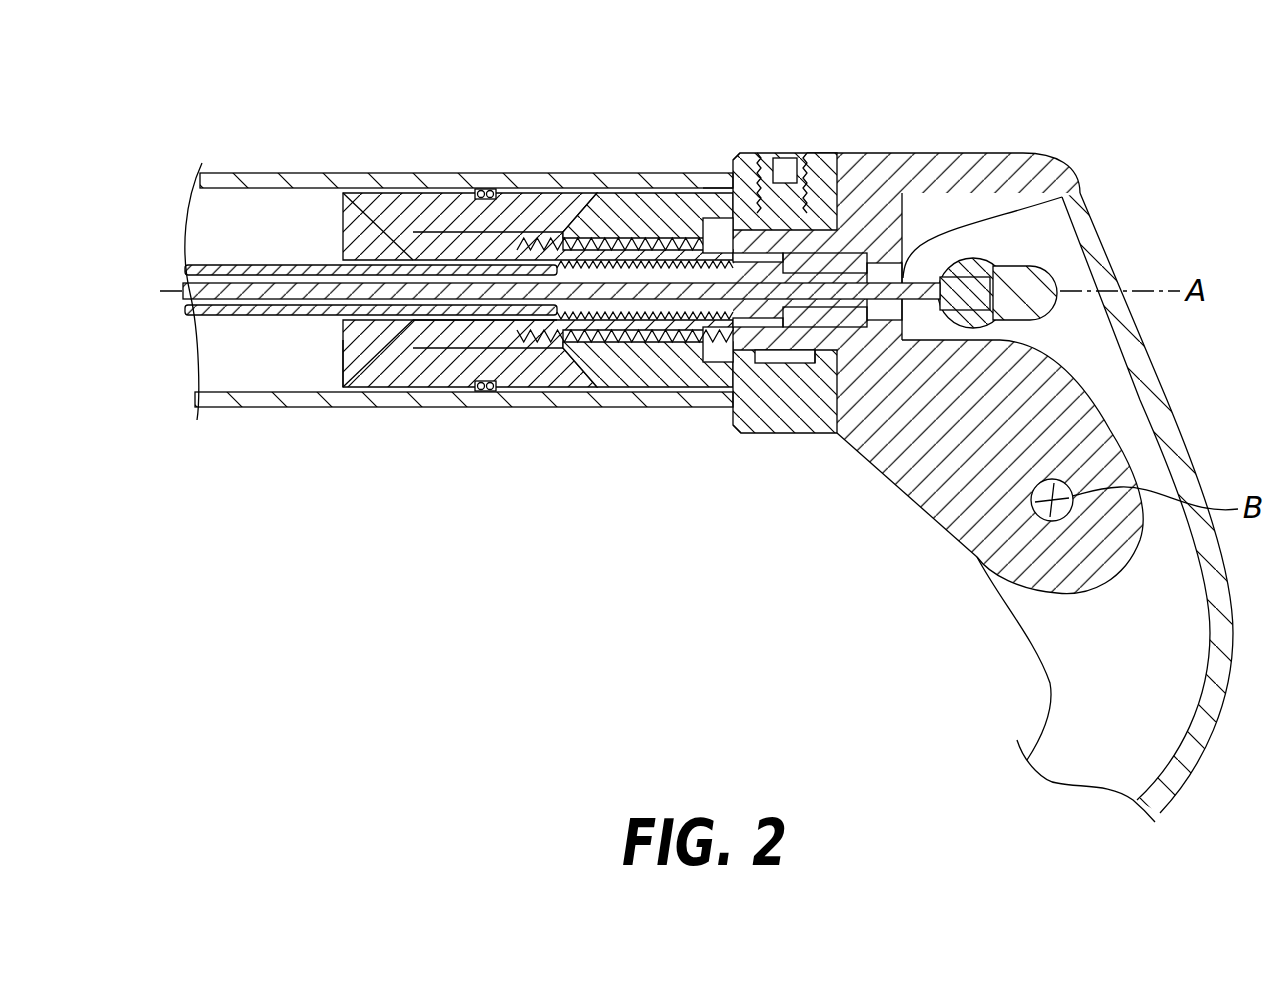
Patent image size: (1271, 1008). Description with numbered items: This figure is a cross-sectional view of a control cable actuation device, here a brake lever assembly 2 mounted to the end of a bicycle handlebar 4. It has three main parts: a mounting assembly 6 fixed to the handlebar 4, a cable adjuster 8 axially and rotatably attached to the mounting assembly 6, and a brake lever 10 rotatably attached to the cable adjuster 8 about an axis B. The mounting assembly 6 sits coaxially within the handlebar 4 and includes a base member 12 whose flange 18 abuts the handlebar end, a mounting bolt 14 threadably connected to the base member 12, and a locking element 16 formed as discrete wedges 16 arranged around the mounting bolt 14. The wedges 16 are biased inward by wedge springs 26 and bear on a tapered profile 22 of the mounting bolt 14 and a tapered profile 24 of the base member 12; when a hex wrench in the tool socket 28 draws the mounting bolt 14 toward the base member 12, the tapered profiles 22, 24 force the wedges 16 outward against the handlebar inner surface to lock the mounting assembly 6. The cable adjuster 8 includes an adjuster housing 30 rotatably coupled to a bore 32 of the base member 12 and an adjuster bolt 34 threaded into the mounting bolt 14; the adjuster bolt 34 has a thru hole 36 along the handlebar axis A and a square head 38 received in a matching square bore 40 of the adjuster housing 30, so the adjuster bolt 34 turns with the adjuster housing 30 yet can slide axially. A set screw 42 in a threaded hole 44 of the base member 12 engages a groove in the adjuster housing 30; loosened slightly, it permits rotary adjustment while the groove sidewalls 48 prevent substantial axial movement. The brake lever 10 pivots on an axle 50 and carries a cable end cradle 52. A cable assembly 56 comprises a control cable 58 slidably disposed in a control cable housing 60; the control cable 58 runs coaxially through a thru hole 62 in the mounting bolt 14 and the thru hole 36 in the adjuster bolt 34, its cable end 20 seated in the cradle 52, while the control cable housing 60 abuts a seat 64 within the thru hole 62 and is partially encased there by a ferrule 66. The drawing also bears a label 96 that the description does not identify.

The brake lever assembly 2 is at (1065, 155).
The bicycle handlebar 4 is at (278, 173).
The mounting assembly 6 is at (483, 420).
The cable adjuster 8 is at (962, 135).
The brake lever 10 is at (1117, 273).
The base member 12 is at (737, 153).
The mounting bolt 14 is at (370, 348).
The locking element 16 is at (448, 208).
The flange 18 is at (748, 153).
The cable end 20 is at (1038, 258).
The tapered profile 22 is at (402, 203).
The tapered profile 24 is at (578, 205).
The wedge springs 26 is at (486, 190).
The tool socket 28 is at (652, 343).
The adjuster housing 30 is at (903, 490).
The bore 32 is at (712, 177).
The adjuster bolt 34 is at (697, 216).
The thru hole 36 is at (840, 262).
The head 38 is at (755, 363).
The bore 40 is at (730, 410).
The set screw 42 is at (767, 153).
The threaded hole 44 is at (805, 153).
The sidewalls 48 is at (770, 363).
The axle 50 is at (1065, 481).
The cable end cradle 52 is at (957, 257).
The cable assembly 56 is at (212, 240).
The control cable 58 is at (480, 300).
The control cable housing 60 is at (303, 258).
The thru hole 62 is at (370, 383).
The seat 64 is at (563, 342).
The ferrule 66 is at (415, 325).
The slot wall 96 is at (787, 365).